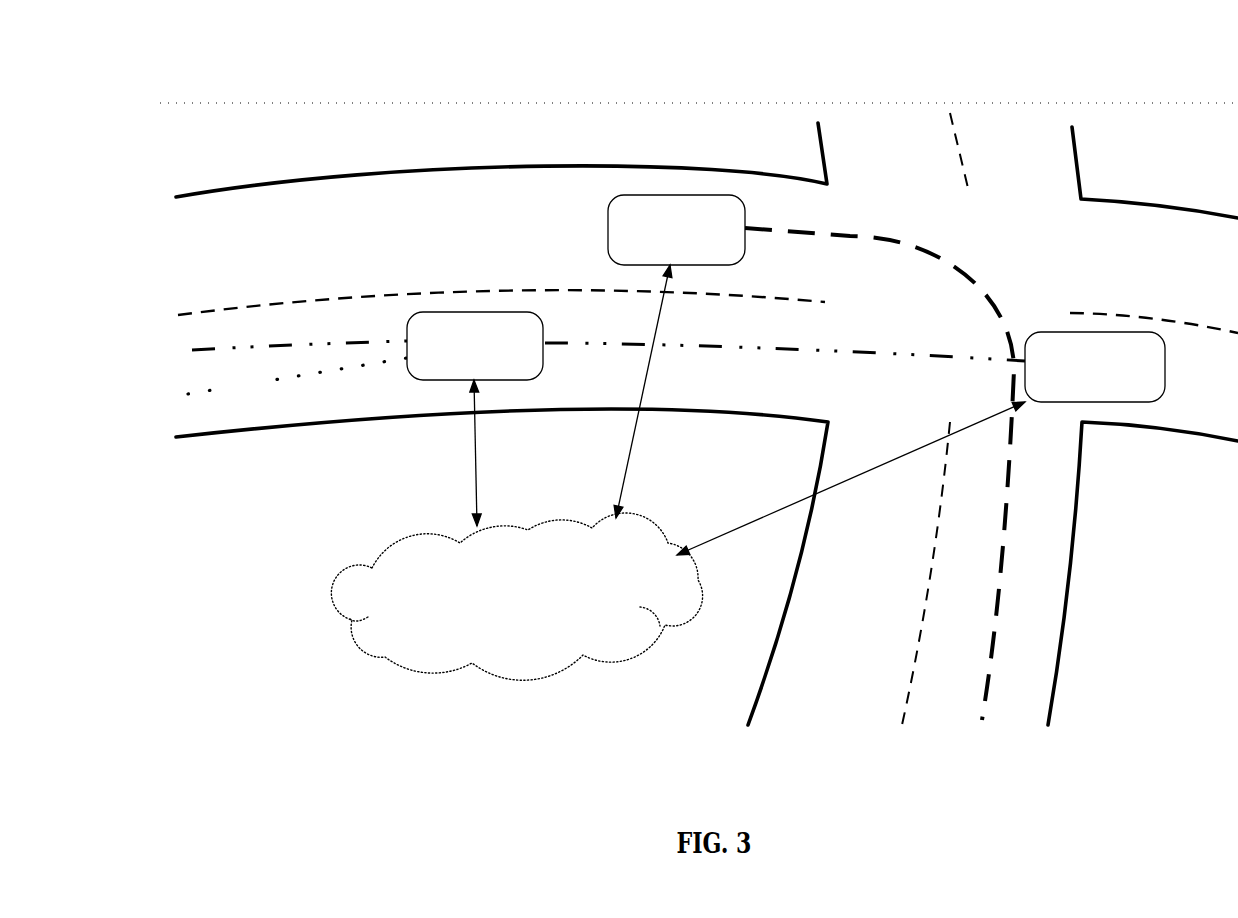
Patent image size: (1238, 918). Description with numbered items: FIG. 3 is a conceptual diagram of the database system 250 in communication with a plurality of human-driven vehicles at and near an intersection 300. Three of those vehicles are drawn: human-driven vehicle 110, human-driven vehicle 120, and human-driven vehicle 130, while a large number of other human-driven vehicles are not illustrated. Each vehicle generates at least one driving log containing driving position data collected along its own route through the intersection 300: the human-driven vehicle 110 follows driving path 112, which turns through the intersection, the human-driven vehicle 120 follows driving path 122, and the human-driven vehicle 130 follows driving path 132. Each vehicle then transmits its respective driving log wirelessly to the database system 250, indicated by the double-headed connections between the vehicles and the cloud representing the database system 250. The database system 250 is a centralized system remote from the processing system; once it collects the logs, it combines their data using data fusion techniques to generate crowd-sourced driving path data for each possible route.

The intersection 300 is at (1143, 117).
The human-driven vehicle 110 is at (660, 241).
The human-driven vehicle 120 is at (457, 357).
The human-driven vehicle 130 is at (1077, 377).
The driving path 112 is at (889, 473).
The driving path 122 is at (297, 376).
The driving path 132 is at (608, 343).
The database system 250 is at (501, 624).